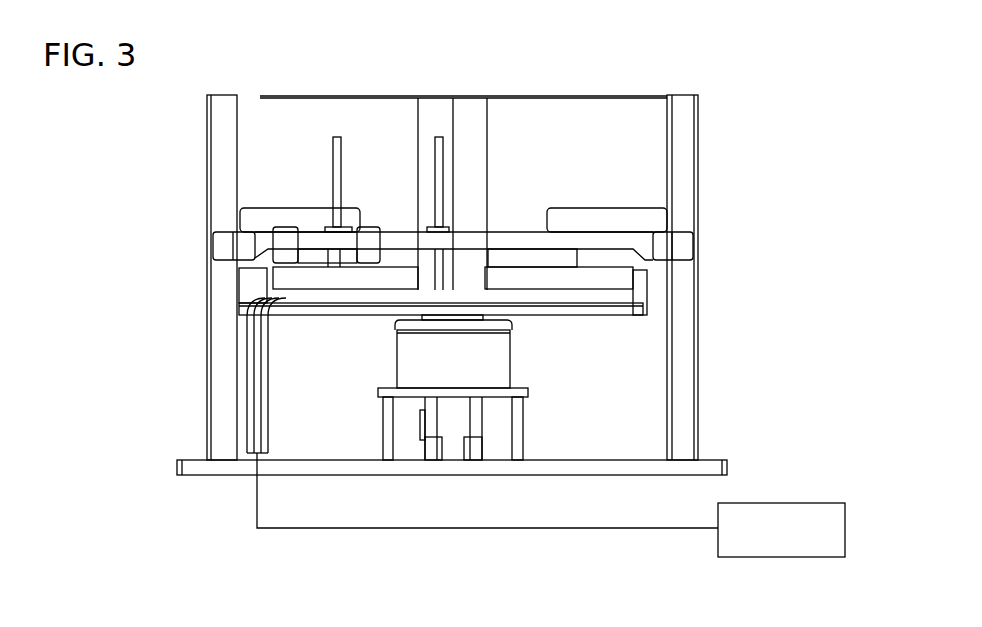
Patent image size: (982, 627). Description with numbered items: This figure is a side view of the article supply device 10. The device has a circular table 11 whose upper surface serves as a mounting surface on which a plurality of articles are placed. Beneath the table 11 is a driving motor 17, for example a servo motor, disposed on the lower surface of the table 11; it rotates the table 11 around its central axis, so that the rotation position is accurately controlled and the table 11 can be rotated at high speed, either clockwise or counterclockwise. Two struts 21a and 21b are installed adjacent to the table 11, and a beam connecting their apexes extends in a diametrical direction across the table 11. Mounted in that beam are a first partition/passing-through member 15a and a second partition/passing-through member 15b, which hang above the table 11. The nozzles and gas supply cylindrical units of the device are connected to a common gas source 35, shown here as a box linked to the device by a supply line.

The article supply device 10 is at (740, 108).
The table 11 is at (620, 313).
The first partition/passing-through member 15a is at (318, 283).
The second partition/passing-through member 15b is at (400, 283).
The driving motor 17 is at (456, 413).
The strut 21a is at (683, 187).
The strut 21b is at (225, 145).
The gas source 35 is at (815, 503).